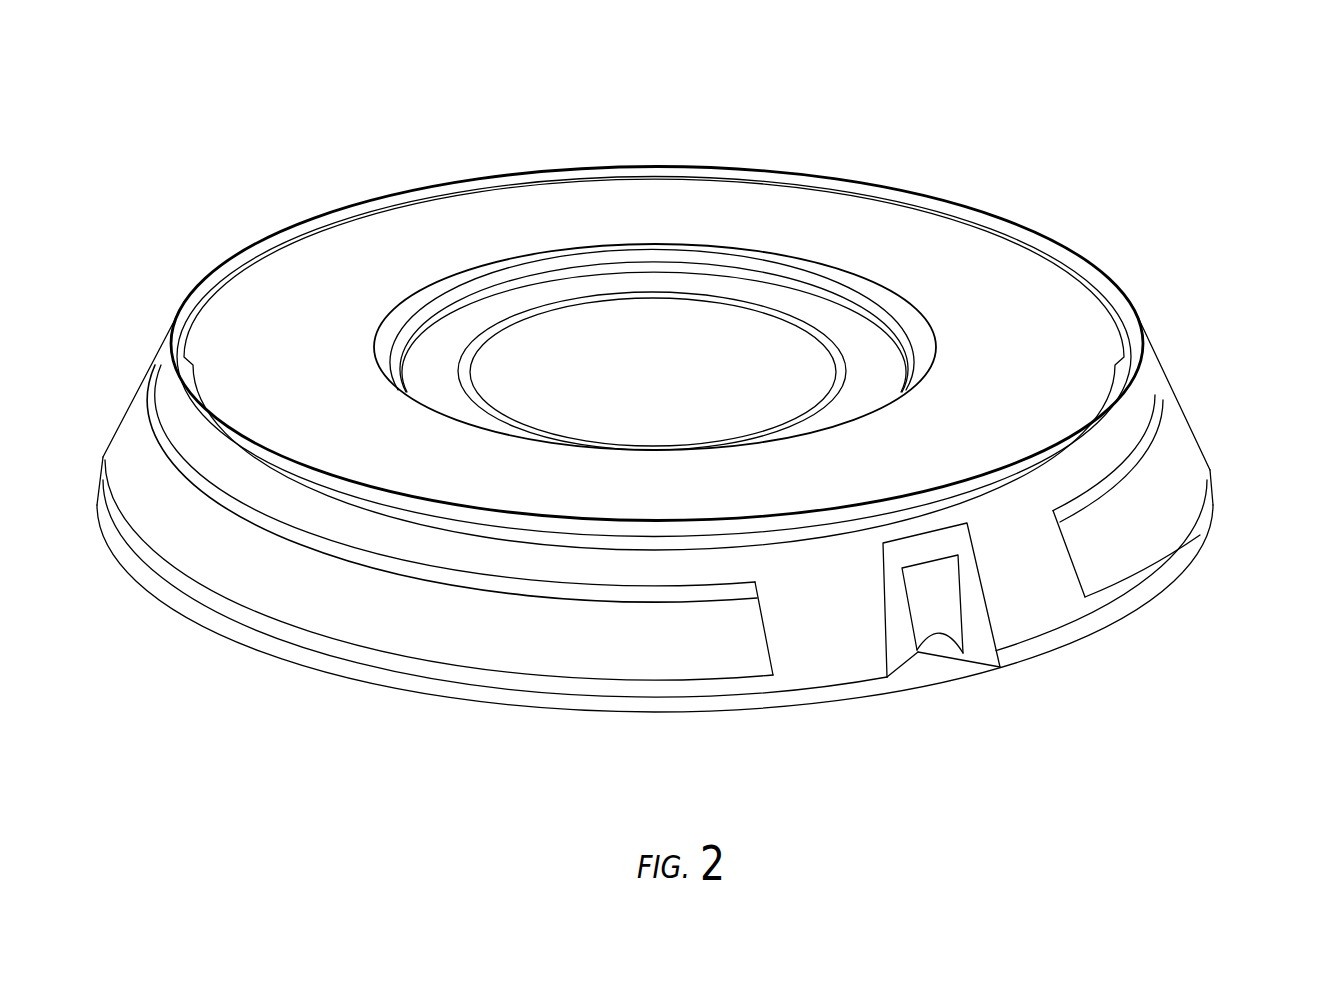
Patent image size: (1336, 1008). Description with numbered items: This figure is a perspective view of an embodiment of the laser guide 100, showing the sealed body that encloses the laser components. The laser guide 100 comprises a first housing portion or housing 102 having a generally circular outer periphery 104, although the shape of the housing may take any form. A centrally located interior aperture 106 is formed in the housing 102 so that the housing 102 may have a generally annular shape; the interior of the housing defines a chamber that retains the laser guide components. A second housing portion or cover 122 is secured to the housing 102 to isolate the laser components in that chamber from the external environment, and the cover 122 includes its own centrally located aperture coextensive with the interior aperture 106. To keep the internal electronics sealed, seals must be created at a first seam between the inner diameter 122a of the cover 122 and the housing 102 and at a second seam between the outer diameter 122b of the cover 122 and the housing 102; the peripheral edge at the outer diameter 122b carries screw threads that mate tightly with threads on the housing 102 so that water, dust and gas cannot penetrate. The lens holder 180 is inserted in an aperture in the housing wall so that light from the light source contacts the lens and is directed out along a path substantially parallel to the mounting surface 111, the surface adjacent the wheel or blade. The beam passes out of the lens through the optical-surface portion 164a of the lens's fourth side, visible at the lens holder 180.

The laser guide 100 is at (1100, 235).
The housing 102 is at (1133, 320).
The outer periphery 104 is at (1213, 520).
The interior aperture 106 is at (668, 388).
The mounting surface 111 is at (632, 715).
The cover 122 is at (876, 230).
The inner diameter 122a is at (523, 327).
The outer diameter 122b is at (1010, 225).
The portion of fourth side 164a is at (935, 653).
The lens holder 180 is at (930, 593).